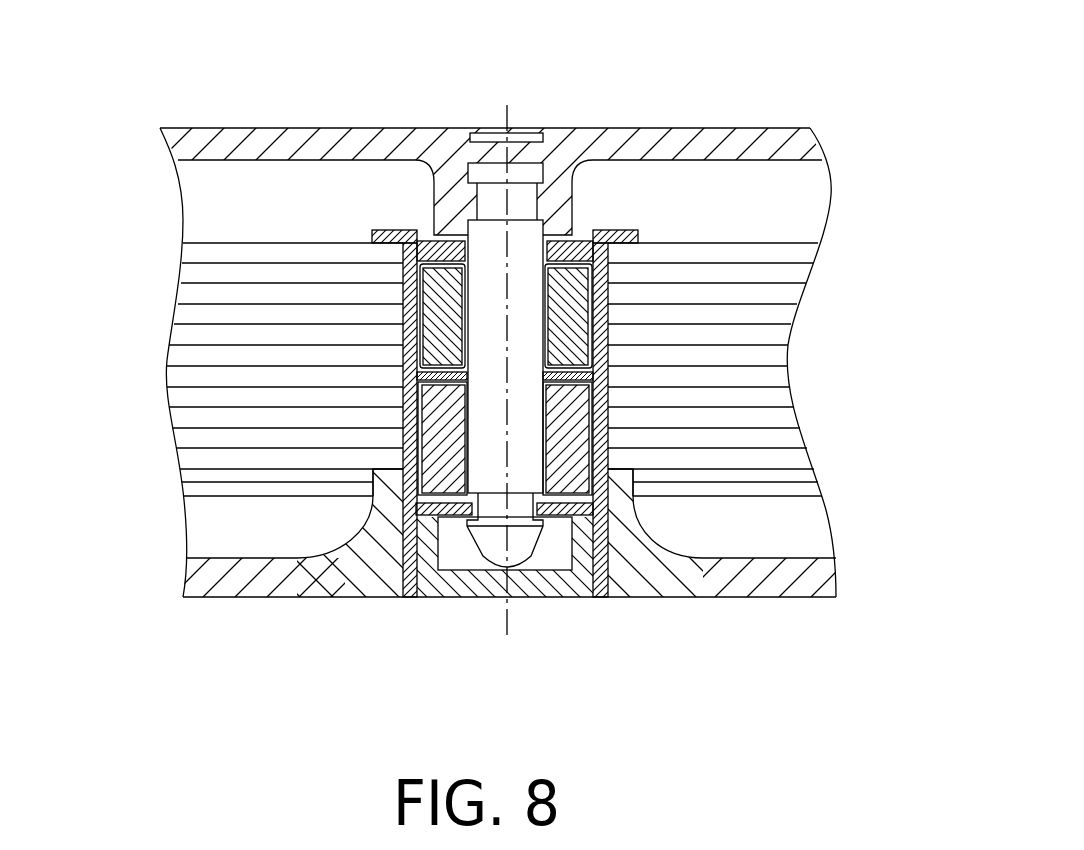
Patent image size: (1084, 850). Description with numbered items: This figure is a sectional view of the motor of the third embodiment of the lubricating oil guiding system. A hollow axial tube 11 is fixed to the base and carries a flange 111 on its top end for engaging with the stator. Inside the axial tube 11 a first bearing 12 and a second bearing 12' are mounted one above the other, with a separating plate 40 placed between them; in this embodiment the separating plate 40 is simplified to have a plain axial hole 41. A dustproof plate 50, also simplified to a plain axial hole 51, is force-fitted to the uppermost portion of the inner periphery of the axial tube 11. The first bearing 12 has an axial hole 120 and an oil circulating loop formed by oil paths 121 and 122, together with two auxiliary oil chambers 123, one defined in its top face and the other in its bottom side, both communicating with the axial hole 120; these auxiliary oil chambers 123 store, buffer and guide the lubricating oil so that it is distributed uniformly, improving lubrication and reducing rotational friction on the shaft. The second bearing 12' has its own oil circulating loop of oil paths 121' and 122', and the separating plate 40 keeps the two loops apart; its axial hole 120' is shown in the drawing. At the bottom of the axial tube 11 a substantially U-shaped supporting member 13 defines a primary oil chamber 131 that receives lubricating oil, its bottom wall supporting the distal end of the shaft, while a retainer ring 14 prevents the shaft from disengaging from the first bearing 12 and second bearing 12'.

The axial tube 11 is at (602, 597).
The flange 111 is at (638, 230).
The first bearing 12 is at (454, 209).
The second bearing 12' is at (340, 448).
The axial hole 120 is at (676, 307).
The lower bearing 120' is at (693, 458).
The oil path 121 is at (721, 371).
The oil path 121' is at (257, 359).
The oil path 122 is at (355, 378).
The oil path 122' is at (782, 457).
The auxiliary oil chamber 123 is at (575, 245).
The supporting member 13 is at (433, 593).
The primary oil chamber 131 is at (470, 555).
The retainer ring 14 is at (345, 588).
The separating plate 40 is at (420, 370).
The axial hole 41 is at (590, 376).
The dustproof plate 50 is at (585, 238).
The axial hole 51 is at (562, 242).